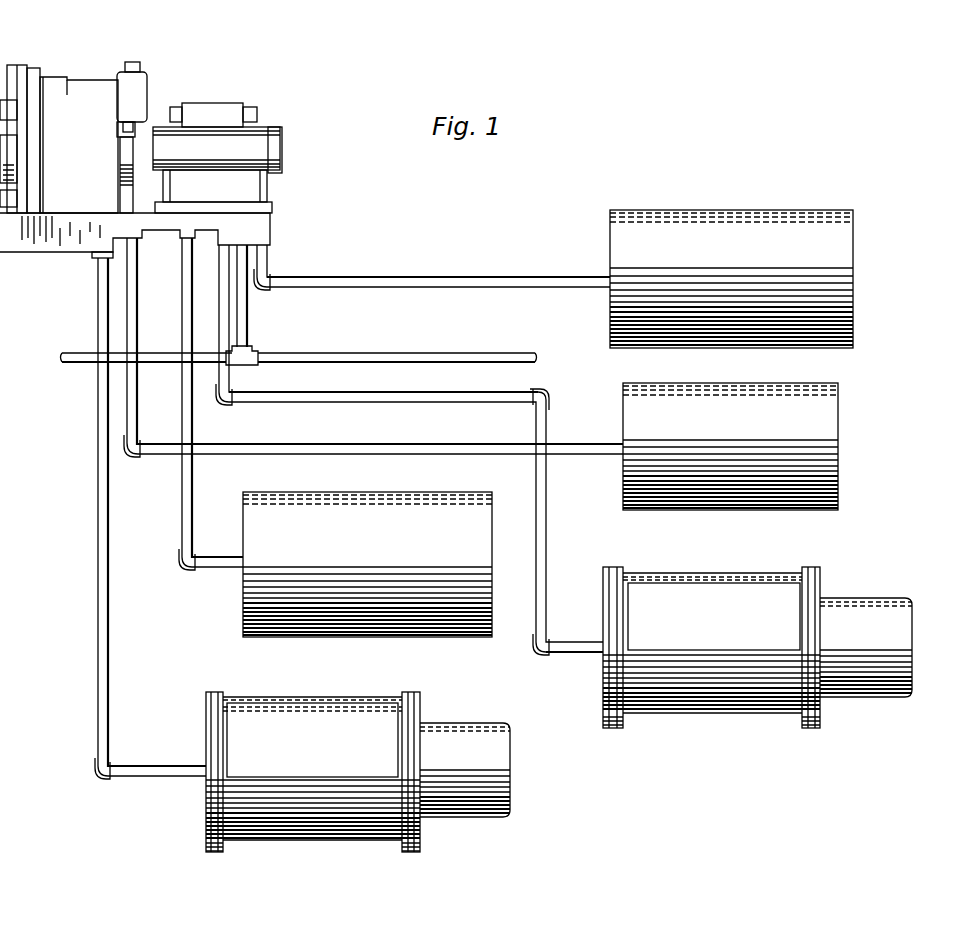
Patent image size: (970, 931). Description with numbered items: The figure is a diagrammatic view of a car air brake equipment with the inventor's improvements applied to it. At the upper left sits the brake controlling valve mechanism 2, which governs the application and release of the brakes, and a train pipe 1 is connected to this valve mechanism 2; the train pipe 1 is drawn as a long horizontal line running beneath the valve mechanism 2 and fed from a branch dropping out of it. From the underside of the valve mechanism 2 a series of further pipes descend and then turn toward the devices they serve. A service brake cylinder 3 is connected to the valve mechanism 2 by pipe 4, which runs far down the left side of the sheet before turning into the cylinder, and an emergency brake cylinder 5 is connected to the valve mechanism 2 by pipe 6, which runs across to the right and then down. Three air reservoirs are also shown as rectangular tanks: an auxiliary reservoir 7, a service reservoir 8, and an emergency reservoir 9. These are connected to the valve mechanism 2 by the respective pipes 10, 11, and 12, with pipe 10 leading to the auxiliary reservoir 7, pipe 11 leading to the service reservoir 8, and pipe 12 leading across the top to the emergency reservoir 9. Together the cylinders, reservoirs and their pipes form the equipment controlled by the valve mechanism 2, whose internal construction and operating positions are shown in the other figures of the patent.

The train pipe 1 is at (243, 307).
The brake controlling valve mechanism 2 is at (107, 105).
The service brake cylinder 3 is at (343, 727).
The pipe 4 is at (108, 613).
The emergency brake cylinder 5 is at (660, 595).
The pipe 6 is at (546, 486).
The auxiliary reservoir 7 is at (640, 400).
The service reservoir 8 is at (350, 503).
The emergency reservoir 9 is at (618, 250).
The pipe 10 is at (265, 446).
The pipe 11 is at (187, 478).
The pipe 12 is at (435, 280).